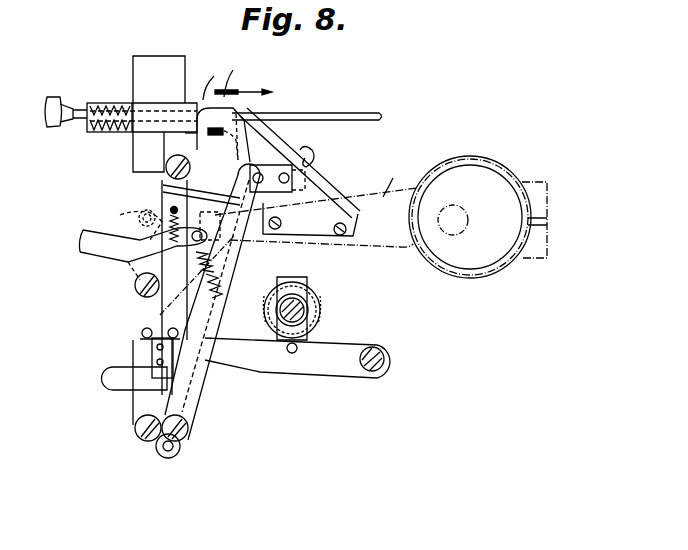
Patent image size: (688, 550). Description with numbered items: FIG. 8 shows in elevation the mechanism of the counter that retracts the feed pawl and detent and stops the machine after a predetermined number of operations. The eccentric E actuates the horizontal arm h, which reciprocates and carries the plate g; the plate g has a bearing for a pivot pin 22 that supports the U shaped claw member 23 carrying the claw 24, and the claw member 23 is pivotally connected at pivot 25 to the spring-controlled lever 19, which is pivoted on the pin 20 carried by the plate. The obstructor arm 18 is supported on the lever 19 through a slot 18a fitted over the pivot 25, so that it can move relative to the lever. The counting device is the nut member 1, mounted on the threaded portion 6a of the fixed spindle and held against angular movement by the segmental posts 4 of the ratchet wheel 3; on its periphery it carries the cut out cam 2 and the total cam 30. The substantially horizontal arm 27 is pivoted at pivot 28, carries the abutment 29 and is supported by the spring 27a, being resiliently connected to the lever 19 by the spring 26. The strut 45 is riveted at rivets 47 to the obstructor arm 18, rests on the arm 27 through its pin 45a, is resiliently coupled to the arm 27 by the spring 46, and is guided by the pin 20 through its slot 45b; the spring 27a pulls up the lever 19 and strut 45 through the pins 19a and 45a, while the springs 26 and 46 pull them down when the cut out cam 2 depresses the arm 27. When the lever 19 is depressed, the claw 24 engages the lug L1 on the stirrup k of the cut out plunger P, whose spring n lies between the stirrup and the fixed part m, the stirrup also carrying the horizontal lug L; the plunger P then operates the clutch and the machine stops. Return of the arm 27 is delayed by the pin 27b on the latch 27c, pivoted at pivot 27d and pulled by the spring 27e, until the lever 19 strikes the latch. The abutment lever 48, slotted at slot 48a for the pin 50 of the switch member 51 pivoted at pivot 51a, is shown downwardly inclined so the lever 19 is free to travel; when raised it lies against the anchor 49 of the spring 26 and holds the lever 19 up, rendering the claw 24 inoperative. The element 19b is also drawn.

The cut out plunger P is at (62, 100).
The spring n is at (113, 103).
The fixed part of the machine m is at (159, 114).
The stirrup k is at (207, 77).
The horizontal lug L is at (233, 72).
The lug on stirrup L1 is at (240, 114).
The U shaped claw member 23 is at (258, 138).
The obstructor arm 18 is at (252, 162).
The slot 18a is at (206, 131).
The claw 24 is at (205, 128).
The pivot 25 is at (163, 182).
The pivot pin 22 is at (300, 188).
The rivets 47 is at (190, 190).
The plate g is at (308, 151).
The total cam 30 is at (300, 275).
The abutment lever 48 is at (201, 212).
The anchor 49 is at (175, 215).
The arm 27 is at (190, 302).
The spring 27a is at (215, 262).
The switch member 51 is at (103, 235).
The slot 48a is at (150, 268).
The pivot 51a is at (140, 274).
The spring 26 is at (138, 292).
The spring 27e is at (160, 295).
The spring 46 is at (208, 275).
The pin 50 is at (263, 245).
The strut 45 is at (183, 407).
The pivot 19b is at (168, 458).
The slot 45b is at (187, 440).
The pin 20 is at (168, 438).
The pivot 27d is at (140, 430).
The latch 27c is at (130, 390).
The pin 19a is at (152, 350).
The spring-controlled lever 19 is at (143, 333).
The pin 27b is at (145, 340).
The nut member 1 is at (318, 300).
The posts 4 is at (312, 308).
The threaded portion 6a is at (305, 316).
The ratchet wheel 3 is at (270, 312).
The pin 45a is at (258, 362).
The pivot 28 is at (374, 348).
The abutment 29 is at (295, 352).
The cut out cam 2 is at (283, 342).
The horizontal arm h is at (316, 202).
The eccentric E is at (470, 175).